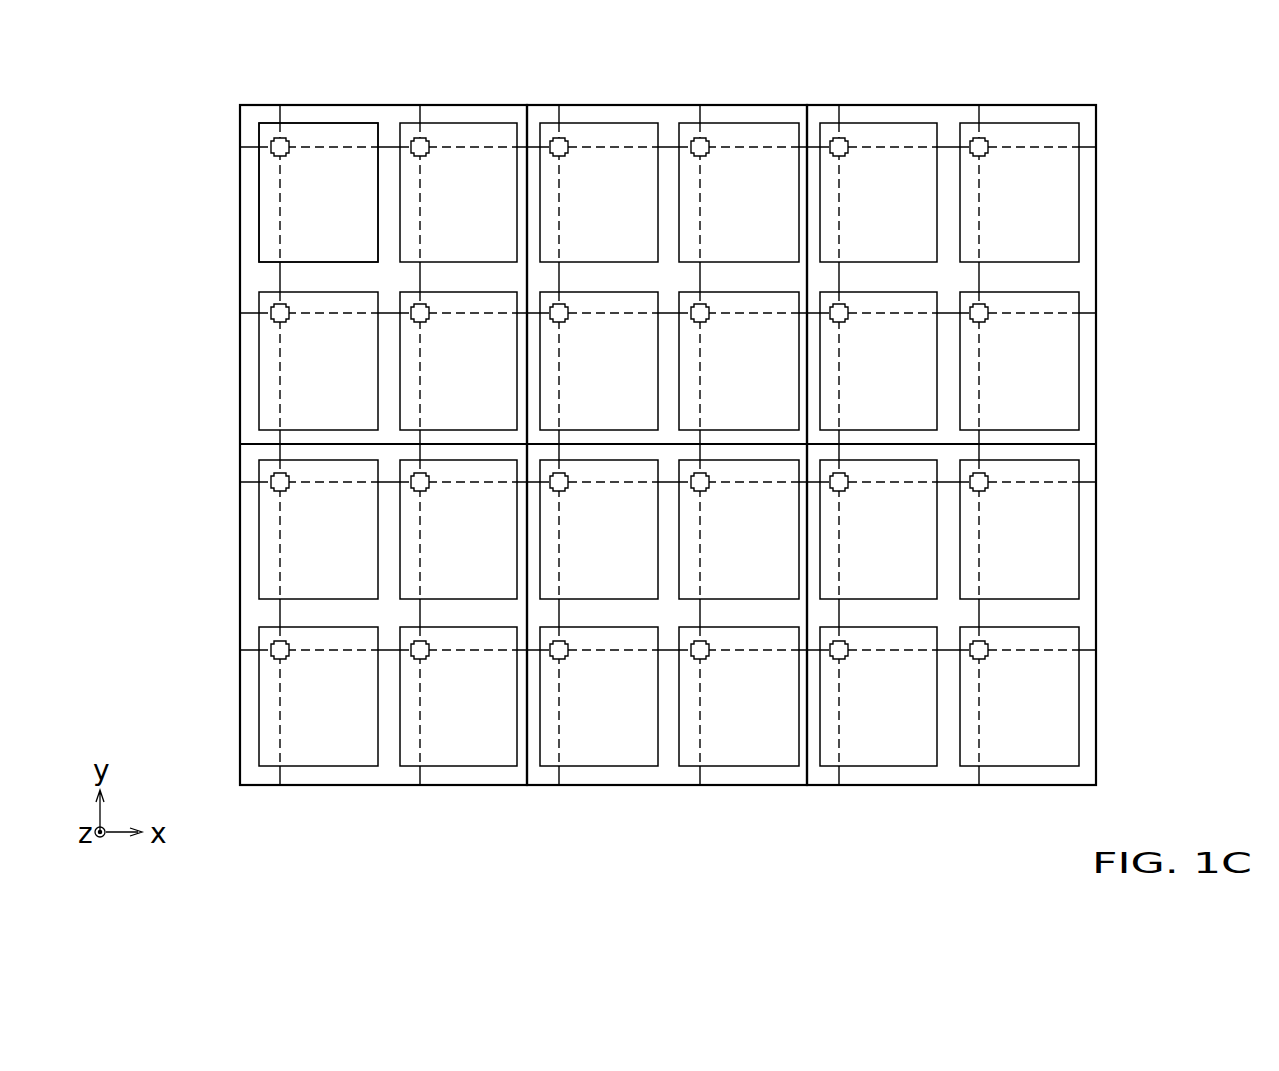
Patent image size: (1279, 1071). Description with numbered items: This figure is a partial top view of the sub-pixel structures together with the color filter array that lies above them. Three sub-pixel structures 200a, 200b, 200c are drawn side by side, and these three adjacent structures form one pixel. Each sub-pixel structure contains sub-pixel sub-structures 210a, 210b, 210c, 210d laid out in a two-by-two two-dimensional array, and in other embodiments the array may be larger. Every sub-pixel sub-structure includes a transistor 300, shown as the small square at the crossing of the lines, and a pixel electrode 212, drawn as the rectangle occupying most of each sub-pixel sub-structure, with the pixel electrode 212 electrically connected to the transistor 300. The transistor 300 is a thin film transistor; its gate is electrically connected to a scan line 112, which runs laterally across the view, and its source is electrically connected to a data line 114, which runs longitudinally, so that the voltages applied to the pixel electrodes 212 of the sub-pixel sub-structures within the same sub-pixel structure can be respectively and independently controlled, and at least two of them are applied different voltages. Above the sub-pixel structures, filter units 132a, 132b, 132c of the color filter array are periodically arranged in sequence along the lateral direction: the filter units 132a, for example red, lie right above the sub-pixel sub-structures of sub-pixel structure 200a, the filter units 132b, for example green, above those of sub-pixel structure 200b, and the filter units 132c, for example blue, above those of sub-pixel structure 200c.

The scan line 112 is at (320, 145).
The data line 114 is at (420, 171).
The filter units 132a is at (358, 118).
The filter units 132b is at (715, 93).
The filter units 132c is at (1002, 94).
The sub-pixel structure 200a is at (293, 110).
The sub-pixel structure 200b is at (587, 107).
The sub-pixel structure 200c is at (861, 107).
The sub-pixel sub-structure 210a is at (290, 239).
The sub-pixel sub-structure 210b is at (476, 156).
The sub-pixel sub-structure 210c is at (290, 349).
The sub-pixel sub-structure 210d is at (439, 369).
The pixel electrode 212 is at (259, 218).
The transistor 300 is at (271, 141).